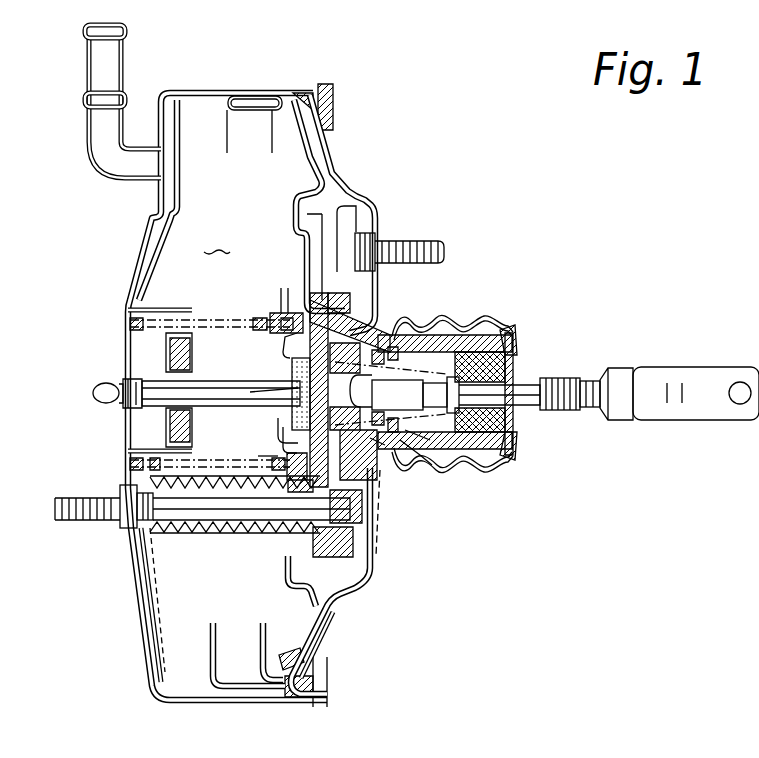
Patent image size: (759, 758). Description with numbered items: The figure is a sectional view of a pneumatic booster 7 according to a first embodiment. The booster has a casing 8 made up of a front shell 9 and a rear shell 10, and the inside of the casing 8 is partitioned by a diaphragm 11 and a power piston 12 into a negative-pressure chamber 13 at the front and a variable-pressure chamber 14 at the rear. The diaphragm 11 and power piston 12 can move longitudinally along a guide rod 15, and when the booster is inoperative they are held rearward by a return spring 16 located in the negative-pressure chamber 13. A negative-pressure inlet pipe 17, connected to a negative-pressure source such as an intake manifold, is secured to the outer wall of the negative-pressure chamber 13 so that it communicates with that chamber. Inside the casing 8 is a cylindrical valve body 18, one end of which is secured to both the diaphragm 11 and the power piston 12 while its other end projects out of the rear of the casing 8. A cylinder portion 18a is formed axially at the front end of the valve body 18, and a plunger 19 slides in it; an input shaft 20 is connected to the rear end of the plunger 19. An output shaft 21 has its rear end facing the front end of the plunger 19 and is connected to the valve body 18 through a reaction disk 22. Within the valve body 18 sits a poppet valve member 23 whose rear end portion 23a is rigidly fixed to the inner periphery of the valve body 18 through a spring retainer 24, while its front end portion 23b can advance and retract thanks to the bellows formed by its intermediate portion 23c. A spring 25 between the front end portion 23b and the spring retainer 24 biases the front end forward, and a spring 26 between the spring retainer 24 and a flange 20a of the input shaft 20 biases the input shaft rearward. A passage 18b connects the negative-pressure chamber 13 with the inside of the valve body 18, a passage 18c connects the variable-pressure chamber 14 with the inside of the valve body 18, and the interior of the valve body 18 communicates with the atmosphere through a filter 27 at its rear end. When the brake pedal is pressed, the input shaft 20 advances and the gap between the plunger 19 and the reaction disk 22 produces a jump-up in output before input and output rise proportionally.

The pneumatic booster 7 is at (404, 113).
The casing 8 is at (240, 88).
The front shell 9 is at (147, 240).
The rear shell 10 is at (340, 182).
The diaphragm 11 is at (268, 97).
The power piston 12 is at (304, 133).
The negative-pressure chamber 13 is at (217, 238).
The variable-pressure chamber 14 is at (331, 253).
The guide rod 15 is at (223, 513).
The return spring 16 is at (206, 318).
The negative-pressure inlet pipe 17 is at (122, 56).
The valve body 18 is at (450, 320).
The cylinder portion 18a is at (300, 313).
The passage 18b is at (362, 338).
The passage 18c is at (362, 527).
The plunger 19 is at (275, 410).
The input shaft 20 is at (530, 387).
The flange 20a is at (500, 300).
The output shaft 21 is at (210, 390).
The reaction disk 22 is at (247, 392).
The poppet valve member 23 is at (405, 435).
The rear end portion 23a is at (436, 468).
The front end portion 23b is at (380, 446).
The intermediate portion 23c is at (428, 445).
The spring retainer 24 is at (470, 458).
The spring 25 is at (420, 340).
The spring 26 is at (452, 370).
The filter 27 is at (507, 327).